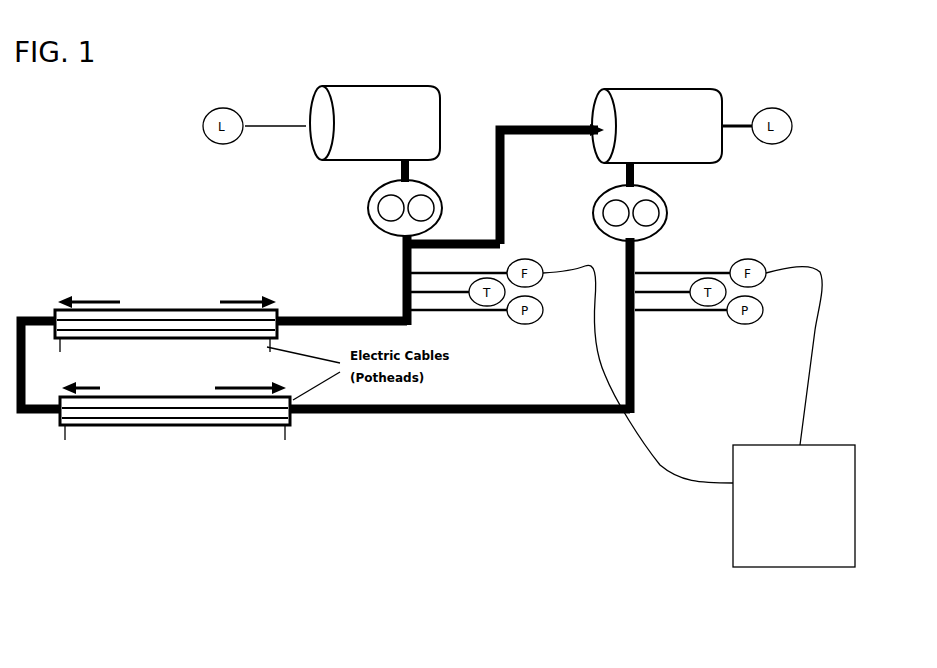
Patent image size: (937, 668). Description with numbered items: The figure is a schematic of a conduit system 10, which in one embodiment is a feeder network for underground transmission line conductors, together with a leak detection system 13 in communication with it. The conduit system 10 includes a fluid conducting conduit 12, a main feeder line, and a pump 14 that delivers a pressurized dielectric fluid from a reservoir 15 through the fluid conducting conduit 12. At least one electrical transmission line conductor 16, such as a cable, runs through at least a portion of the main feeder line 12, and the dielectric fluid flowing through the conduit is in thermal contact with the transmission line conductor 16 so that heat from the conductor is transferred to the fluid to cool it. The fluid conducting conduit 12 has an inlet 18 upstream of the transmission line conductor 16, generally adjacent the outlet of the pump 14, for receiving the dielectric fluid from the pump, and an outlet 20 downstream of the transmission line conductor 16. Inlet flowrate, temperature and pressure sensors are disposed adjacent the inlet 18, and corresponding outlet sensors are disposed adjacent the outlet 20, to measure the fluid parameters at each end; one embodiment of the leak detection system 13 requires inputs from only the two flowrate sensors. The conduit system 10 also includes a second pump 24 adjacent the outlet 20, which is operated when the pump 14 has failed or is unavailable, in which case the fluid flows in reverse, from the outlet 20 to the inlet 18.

The conduit system 10 is at (110, 176).
The fluid conducting conduit 12 is at (450, 413).
The leak detection system 13 is at (737, 547).
The pump 14 is at (660, 228).
The reservoir 15 is at (640, 100).
The electrical transmission line conductor 16 is at (205, 320).
The inlet 18 is at (625, 252).
The outlet 20 is at (402, 258).
The pump 24 is at (368, 210).